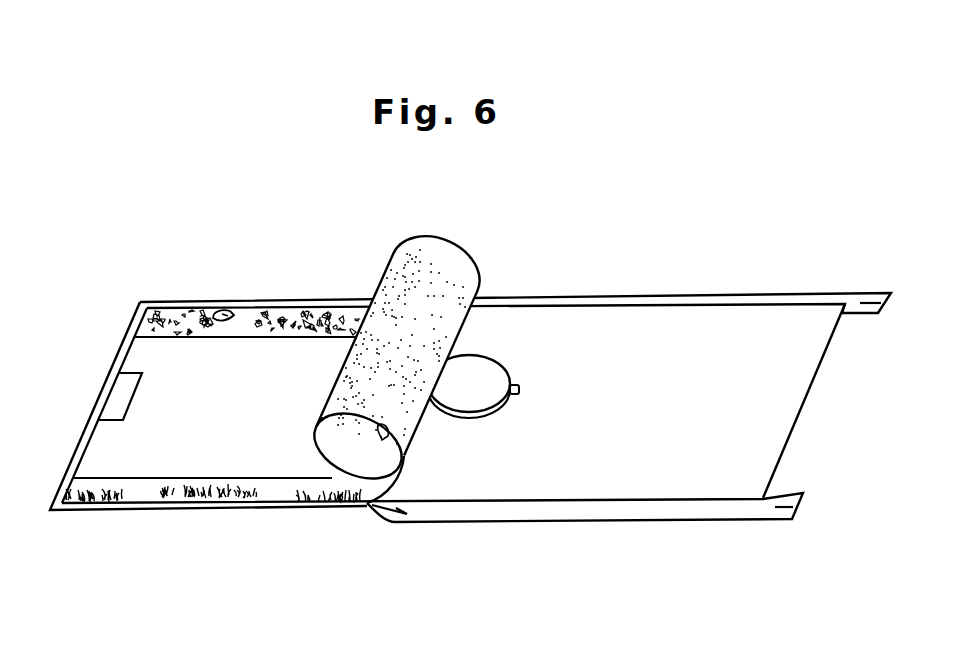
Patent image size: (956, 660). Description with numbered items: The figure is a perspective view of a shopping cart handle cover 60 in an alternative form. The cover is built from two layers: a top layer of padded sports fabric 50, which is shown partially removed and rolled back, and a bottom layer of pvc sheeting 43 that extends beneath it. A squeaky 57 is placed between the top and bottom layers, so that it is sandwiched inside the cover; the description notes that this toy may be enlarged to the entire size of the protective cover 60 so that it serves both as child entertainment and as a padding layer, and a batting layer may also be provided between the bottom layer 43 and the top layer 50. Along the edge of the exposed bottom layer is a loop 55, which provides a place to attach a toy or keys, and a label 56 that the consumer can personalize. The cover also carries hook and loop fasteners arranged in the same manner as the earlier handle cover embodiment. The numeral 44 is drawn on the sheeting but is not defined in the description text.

The shopping cart handle cover 60 is at (188, 180).
The bottom layer of pvc sheeting 43 is at (627, 477).
The sheet edge strip 44 is at (725, 522).
The top layer of padded sports fabric 50 is at (374, 405).
The loop 55 is at (205, 311).
The label 56 is at (96, 397).
The squeaky 57 is at (476, 400).